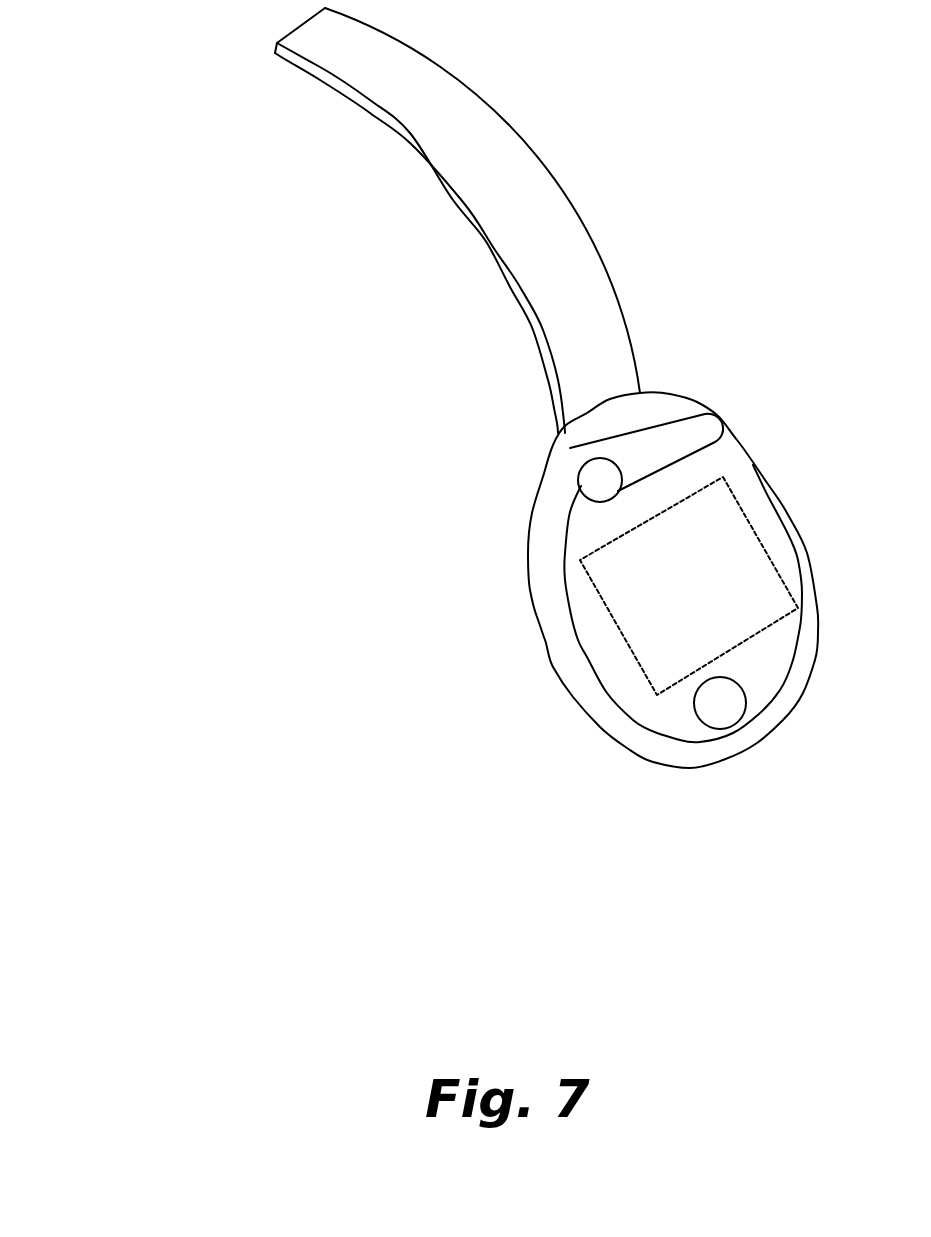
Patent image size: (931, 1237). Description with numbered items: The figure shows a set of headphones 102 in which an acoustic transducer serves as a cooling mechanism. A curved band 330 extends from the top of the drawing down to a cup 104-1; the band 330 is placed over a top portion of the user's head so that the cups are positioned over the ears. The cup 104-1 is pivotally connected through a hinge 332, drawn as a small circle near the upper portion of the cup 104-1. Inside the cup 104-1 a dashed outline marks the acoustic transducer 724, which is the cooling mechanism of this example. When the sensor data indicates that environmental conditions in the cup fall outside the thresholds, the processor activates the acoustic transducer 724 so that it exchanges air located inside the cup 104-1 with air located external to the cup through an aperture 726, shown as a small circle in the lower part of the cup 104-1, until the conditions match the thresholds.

The headphones 102 is at (178, 107).
The band 330 is at (482, 197).
The hinge 332 is at (627, 462).
The cup 104-1 is at (546, 510).
The acoustic transducer 724 is at (689, 586).
The aperture 726 is at (723, 722).